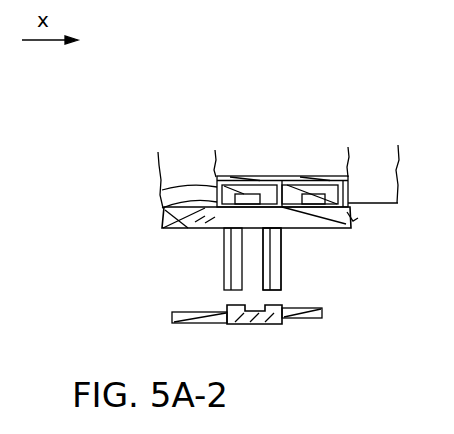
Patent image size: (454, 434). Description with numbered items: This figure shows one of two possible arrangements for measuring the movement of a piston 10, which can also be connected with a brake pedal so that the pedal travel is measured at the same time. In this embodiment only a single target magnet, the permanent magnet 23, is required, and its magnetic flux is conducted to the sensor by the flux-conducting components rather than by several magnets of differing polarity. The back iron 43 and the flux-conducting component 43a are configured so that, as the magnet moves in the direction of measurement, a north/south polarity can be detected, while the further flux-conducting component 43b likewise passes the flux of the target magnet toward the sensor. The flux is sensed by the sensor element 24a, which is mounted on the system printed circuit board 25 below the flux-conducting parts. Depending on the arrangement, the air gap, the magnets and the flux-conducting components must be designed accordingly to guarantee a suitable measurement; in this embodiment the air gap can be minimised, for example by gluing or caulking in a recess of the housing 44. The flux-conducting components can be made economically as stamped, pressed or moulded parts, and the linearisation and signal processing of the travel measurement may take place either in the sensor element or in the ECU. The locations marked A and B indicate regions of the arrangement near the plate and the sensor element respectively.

The piston 10 is at (385, 181).
The permanent magnet 23 is at (167, 210).
The sensor element 24a is at (227, 306).
The system printed circuit board 25 is at (322, 313).
The back iron 43 is at (222, 250).
The flux-conducting component 43a is at (283, 246).
The flux-conducting component 43b is at (160, 190).
The housing 44 is at (350, 212).
The region A is at (183, 219).
The region B is at (282, 298).